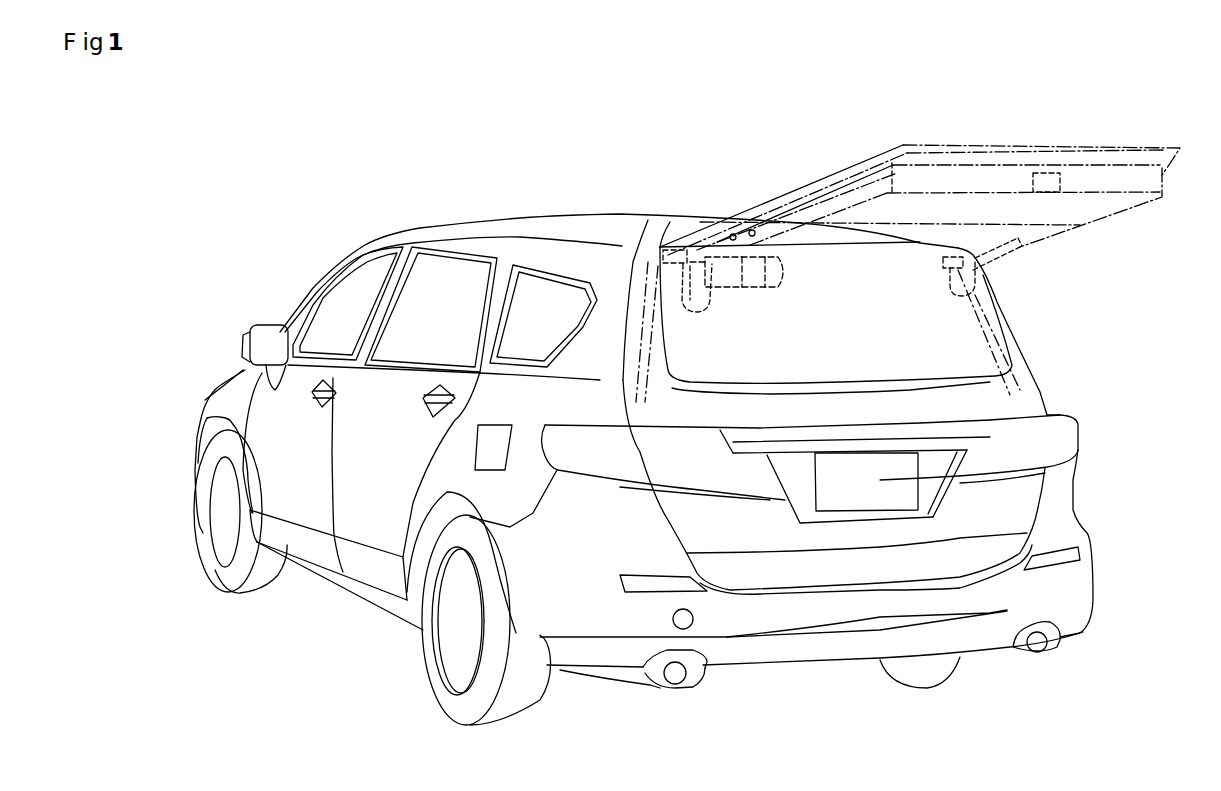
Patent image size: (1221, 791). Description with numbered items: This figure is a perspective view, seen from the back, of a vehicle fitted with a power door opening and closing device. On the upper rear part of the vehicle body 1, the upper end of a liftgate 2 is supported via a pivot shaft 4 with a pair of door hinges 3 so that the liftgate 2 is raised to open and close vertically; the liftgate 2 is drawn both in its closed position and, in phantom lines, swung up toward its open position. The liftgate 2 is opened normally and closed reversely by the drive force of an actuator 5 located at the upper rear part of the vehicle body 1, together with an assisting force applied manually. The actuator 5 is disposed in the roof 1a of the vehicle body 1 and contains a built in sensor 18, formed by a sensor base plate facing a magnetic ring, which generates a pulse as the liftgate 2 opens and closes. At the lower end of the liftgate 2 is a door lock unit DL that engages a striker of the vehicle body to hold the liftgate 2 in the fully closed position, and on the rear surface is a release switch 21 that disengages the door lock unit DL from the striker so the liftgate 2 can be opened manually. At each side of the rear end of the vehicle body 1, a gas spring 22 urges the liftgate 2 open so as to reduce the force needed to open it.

The vehicle body 1 is at (533, 216).
The roof 1a is at (600, 217).
The liftgate 2 is at (1128, 140).
The door hinges 3 is at (712, 307).
The pivot shaft 4 is at (650, 250).
The actuator 5 is at (795, 309).
The built in sensor 18 is at (781, 290).
The release switch 21 is at (870, 450).
The gas spring 22 is at (660, 363).
The door lock unit DL is at (1060, 181).